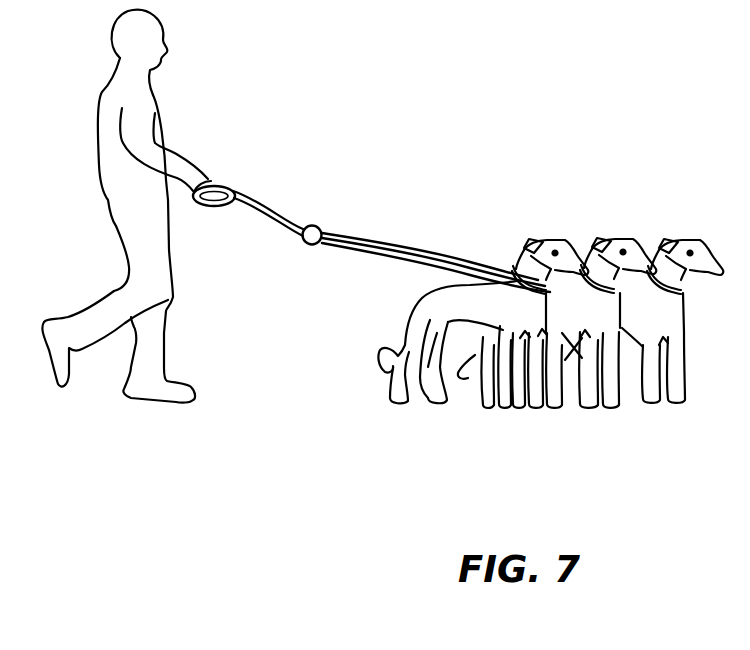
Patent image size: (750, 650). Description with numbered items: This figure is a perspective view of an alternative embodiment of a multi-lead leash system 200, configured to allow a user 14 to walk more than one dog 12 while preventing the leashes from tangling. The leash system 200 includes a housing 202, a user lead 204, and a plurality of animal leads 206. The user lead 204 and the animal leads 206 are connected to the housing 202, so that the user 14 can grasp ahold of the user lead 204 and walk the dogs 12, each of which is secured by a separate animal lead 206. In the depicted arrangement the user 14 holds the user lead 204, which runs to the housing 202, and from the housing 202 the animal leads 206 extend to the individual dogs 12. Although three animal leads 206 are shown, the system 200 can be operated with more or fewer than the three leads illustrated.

The dog 12 is at (682, 233).
The user 14 is at (116, 226).
The multi-lead leash system 200 is at (333, 157).
The housing 202 is at (303, 244).
The user lead 204 is at (240, 195).
The animal leads 206 is at (472, 253).